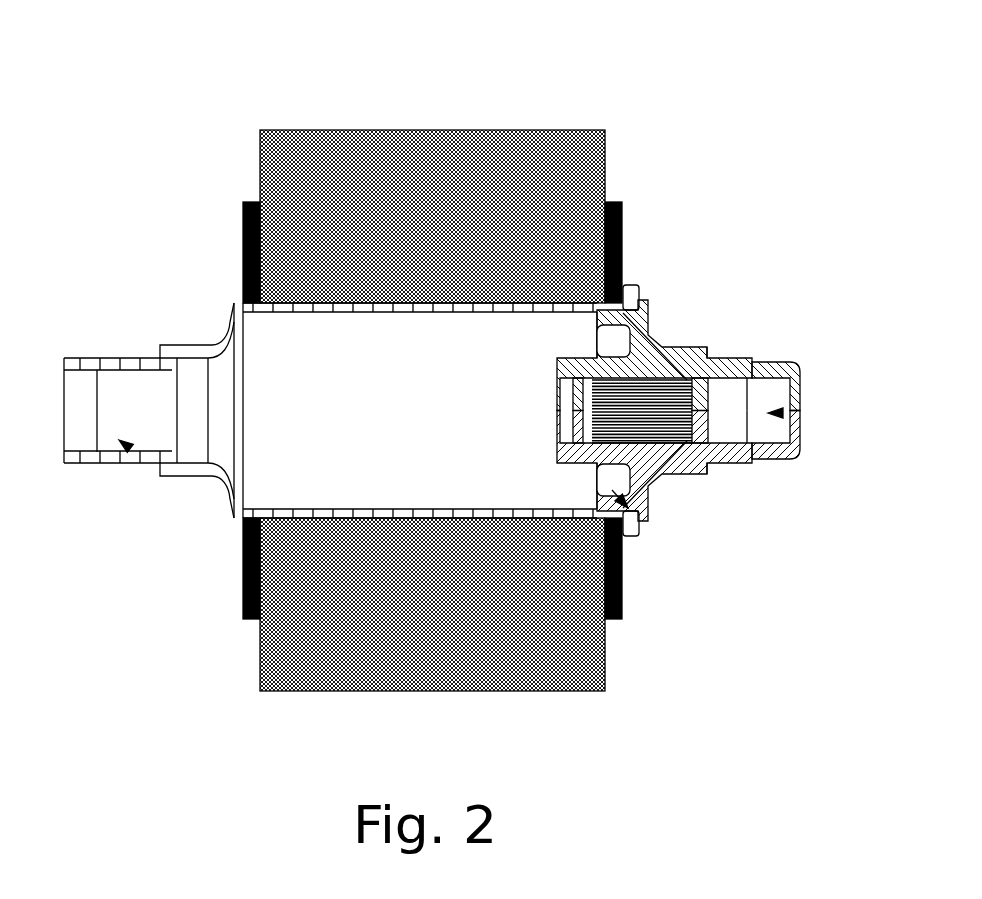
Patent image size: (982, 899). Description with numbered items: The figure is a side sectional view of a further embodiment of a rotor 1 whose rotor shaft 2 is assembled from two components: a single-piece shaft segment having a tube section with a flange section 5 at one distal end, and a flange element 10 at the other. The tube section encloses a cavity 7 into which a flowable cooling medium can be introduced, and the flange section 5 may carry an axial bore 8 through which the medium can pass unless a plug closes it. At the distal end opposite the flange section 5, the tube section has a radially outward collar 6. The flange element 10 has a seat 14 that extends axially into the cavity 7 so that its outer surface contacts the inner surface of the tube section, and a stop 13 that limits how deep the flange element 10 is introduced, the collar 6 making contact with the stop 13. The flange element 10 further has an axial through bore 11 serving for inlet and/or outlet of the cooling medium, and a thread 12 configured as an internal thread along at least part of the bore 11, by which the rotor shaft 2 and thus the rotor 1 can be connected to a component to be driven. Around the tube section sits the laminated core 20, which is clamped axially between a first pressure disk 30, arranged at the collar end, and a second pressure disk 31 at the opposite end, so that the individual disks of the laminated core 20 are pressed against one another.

The rotor 1 is at (345, 72).
The rotor shaft 2 is at (183, 288).
The flange section 5 is at (92, 356).
The collar 6 is at (633, 285).
The cavity 7 is at (379, 432).
The bore 8 is at (124, 463).
The flange element 10 is at (667, 345).
The bore 11 is at (783, 413).
The thread 12 is at (713, 357).
The stop 13 is at (650, 516).
The seat 14 is at (645, 528).
The laminated core 20 is at (530, 129).
The first pressure disk 30 is at (618, 201).
The second pressure disk 31 is at (243, 202).